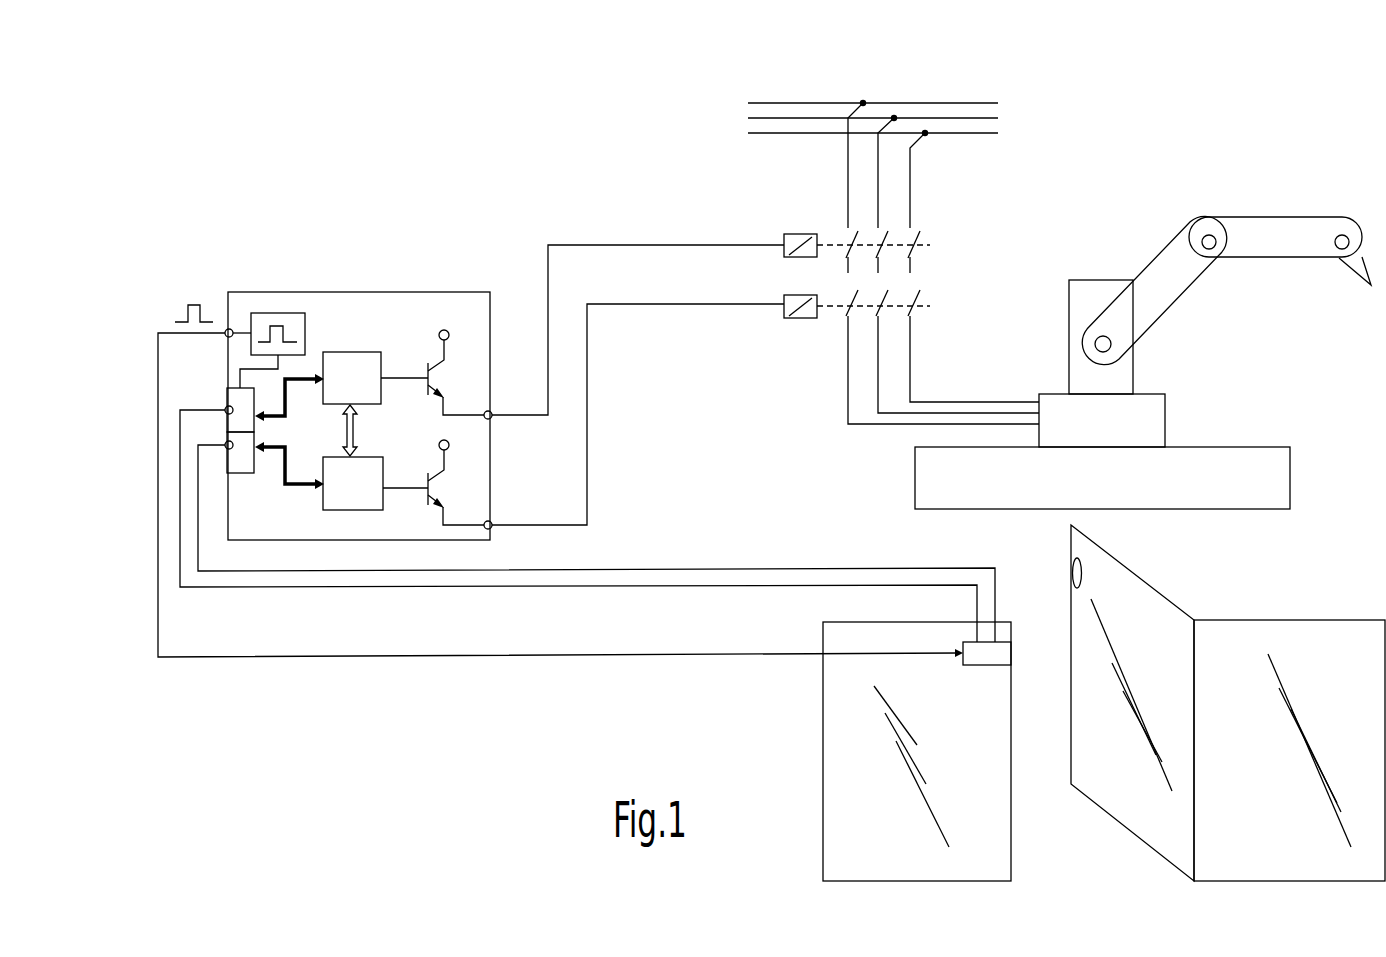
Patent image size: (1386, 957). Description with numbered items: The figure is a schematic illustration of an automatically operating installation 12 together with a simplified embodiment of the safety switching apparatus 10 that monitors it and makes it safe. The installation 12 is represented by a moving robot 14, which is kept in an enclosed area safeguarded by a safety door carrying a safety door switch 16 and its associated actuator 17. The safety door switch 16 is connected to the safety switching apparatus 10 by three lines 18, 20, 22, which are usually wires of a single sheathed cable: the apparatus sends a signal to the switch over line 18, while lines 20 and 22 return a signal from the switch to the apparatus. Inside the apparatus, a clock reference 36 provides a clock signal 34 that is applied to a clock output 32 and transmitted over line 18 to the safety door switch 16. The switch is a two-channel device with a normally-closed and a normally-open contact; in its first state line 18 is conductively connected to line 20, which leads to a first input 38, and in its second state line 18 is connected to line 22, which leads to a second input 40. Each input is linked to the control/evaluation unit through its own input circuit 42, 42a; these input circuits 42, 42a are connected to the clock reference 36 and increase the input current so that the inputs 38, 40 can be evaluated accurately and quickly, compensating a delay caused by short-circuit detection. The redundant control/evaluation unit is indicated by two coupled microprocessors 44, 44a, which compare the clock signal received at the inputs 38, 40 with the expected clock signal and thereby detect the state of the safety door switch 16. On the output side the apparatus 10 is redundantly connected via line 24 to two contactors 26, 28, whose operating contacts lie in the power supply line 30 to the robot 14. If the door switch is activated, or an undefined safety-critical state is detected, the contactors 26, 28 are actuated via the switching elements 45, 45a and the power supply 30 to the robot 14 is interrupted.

The safety switching apparatus 10 is at (259, 234).
The automatically operating installation 12 is at (1068, 218).
The robot 14 is at (1268, 233).
The safety door switch 16 is at (988, 656).
The actuator 17 is at (1082, 566).
The line 18 is at (545, 658).
The line 20 is at (703, 586).
The line 22 is at (633, 570).
The line 24 is at (600, 303).
The contactor 26 is at (790, 234).
The contactor 28 is at (785, 311).
The power supply line 30 is at (873, 115).
The clock output 32 is at (226, 330).
The clock signal 34 is at (188, 305).
The clock reference 36 is at (305, 313).
The first input 38 is at (226, 409).
The second input 40 is at (226, 446).
The input circuit 42 is at (235, 462).
The input circuit 42a is at (237, 398).
The microprocessor 44 is at (338, 503).
The microprocessor 44a is at (367, 352).
The switching element 45 is at (440, 490).
The switching element 45a is at (440, 368).